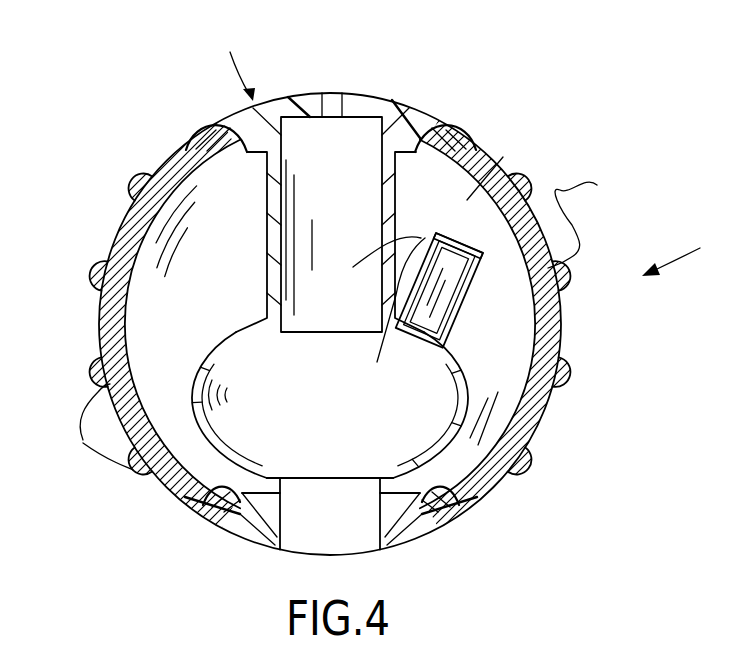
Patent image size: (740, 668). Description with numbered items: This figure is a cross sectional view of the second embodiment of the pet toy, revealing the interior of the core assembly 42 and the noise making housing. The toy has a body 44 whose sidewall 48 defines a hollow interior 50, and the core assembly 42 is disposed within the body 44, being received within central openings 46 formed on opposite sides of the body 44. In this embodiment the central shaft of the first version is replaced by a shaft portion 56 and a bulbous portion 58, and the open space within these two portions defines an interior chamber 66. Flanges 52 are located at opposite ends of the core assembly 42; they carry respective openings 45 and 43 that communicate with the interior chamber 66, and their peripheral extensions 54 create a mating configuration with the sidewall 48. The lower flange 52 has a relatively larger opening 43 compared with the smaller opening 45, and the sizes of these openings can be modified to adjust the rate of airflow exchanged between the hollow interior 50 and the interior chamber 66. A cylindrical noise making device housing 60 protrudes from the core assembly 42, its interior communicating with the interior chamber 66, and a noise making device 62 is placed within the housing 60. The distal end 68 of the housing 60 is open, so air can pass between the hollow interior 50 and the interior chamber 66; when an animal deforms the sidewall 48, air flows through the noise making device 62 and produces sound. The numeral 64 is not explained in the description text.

The core assembly 42 is at (232, 62).
The opening 43 is at (303, 541).
The body 44 is at (683, 248).
The opening 45 is at (341, 92).
The central openings 46 is at (200, 150).
The sidewall 48 is at (552, 333).
The hollow interior 50 is at (503, 157).
The flanges 52 is at (415, 120).
The peripheral extensions 54 is at (213, 123).
The shaft portion 56 is at (268, 240).
The bulbous portion 58 is at (213, 345).
The noise making device housing 60 is at (464, 298).
The noise making device 62 is at (448, 333).
The recess between bosses 64 is at (337, 320).
The interior chamber 66 is at (394, 284).
The distal end 68 is at (443, 235).